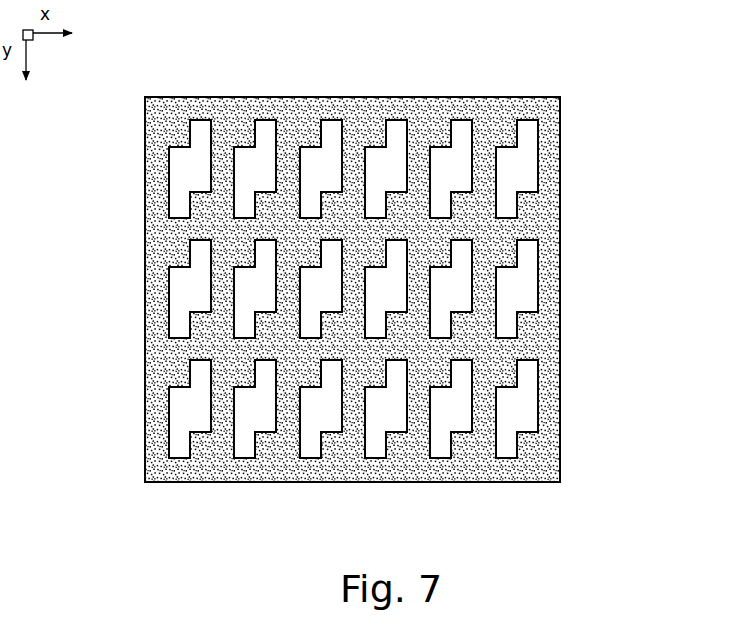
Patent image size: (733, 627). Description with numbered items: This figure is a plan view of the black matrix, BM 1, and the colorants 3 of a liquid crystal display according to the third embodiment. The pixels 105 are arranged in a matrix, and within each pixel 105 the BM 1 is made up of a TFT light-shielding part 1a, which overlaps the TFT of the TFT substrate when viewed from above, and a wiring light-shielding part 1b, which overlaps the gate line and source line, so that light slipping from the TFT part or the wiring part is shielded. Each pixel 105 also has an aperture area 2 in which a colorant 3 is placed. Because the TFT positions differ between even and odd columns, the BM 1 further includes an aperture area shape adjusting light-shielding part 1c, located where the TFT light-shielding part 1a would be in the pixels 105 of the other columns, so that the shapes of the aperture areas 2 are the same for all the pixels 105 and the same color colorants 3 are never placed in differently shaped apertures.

The BM 1 is at (387, 236).
The TFT light-shielding part 1a is at (180, 203).
The wiring light-shielding part 1b is at (222, 132).
The aperture area shape adjusting light-shielding part 1c is at (180, 133).
The aperture area 2 is at (537, 135).
The colorant 3 is at (534, 186).
The pixel 105 is at (547, 273).